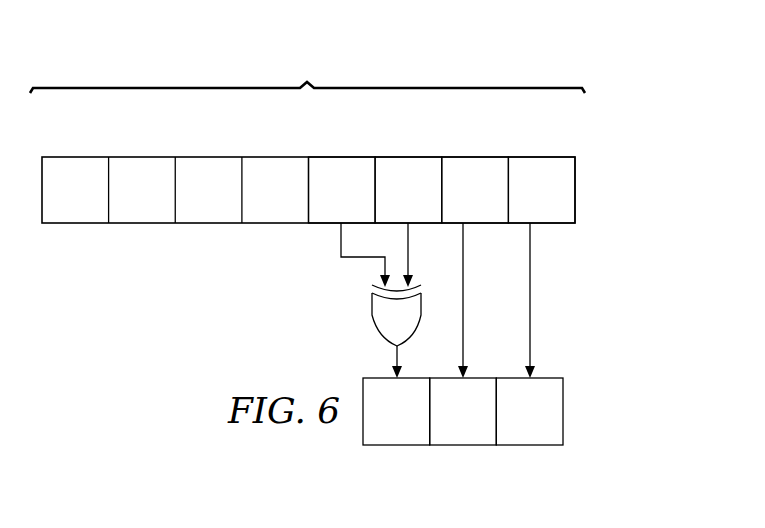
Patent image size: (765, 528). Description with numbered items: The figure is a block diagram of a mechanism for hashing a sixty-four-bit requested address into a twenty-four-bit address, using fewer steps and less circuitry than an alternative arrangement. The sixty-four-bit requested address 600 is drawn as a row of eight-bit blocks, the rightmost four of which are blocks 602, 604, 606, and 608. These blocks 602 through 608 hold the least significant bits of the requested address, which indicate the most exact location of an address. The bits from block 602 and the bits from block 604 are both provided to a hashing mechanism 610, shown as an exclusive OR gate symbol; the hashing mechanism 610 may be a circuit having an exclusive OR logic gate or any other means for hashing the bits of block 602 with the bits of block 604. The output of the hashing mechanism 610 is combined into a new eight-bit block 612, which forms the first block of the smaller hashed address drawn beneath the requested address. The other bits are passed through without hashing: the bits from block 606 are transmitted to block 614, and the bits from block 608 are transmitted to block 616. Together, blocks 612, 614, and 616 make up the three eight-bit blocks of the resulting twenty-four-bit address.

The 64-bit requested address 600 is at (307, 124).
The block 602 is at (352, 157).
The block 604 is at (418, 157).
The block 606 is at (485, 157).
The block 608 is at (552, 157).
The hashing mechanism 610 is at (372, 311).
The 8-bit block 612 is at (407, 445).
The block 614 is at (474, 445).
The block 616 is at (541, 445).